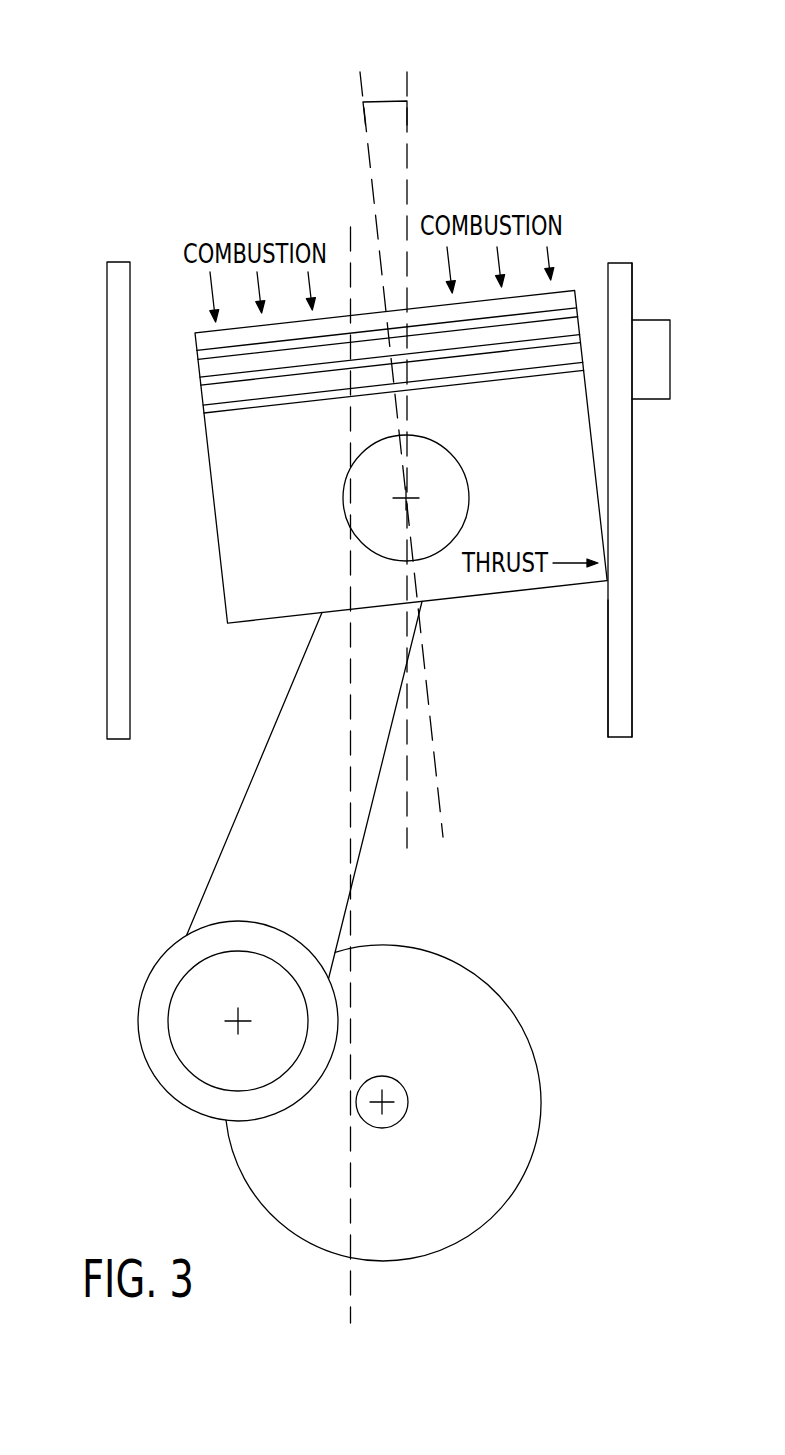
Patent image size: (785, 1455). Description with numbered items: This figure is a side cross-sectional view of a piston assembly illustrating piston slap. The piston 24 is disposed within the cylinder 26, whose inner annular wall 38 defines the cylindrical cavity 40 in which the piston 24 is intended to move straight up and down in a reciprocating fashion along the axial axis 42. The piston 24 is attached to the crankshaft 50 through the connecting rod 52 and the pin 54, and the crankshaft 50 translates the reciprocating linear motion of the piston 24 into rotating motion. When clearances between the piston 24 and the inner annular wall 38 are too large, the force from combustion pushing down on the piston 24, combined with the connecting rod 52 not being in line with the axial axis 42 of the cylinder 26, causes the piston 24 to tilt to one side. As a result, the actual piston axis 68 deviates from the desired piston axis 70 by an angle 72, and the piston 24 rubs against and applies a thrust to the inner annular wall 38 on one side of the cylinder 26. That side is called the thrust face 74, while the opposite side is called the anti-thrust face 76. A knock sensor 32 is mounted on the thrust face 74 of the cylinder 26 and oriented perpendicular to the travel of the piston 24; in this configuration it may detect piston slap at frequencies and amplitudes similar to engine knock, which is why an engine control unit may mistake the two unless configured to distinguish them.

The piston 24 is at (249, 612).
The cylinder 26 is at (632, 716).
The knock sensor 32 is at (672, 359).
The inner annular wall 38 is at (607, 699).
The cylindrical cavity 40 is at (215, 728).
The axial axis 42 is at (352, 927).
The crankshaft 50 is at (542, 1102).
The connecting rod 52 is at (210, 878).
The pin 54 is at (470, 498).
The actual piston axis 68 is at (363, 126).
The desired piston axis 70 is at (408, 126).
The angle 72 is at (383, 101).
The thrust face 74 is at (632, 627).
The anti-thrust face 76 is at (107, 648).